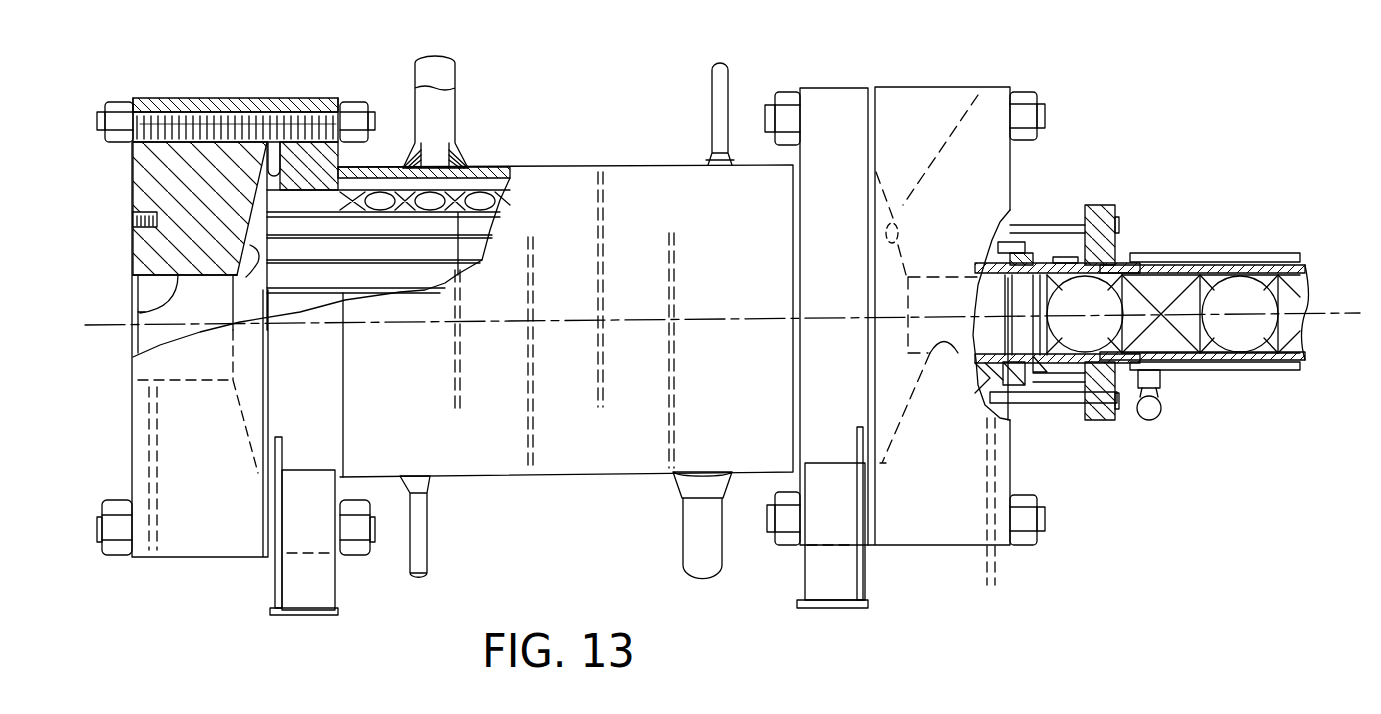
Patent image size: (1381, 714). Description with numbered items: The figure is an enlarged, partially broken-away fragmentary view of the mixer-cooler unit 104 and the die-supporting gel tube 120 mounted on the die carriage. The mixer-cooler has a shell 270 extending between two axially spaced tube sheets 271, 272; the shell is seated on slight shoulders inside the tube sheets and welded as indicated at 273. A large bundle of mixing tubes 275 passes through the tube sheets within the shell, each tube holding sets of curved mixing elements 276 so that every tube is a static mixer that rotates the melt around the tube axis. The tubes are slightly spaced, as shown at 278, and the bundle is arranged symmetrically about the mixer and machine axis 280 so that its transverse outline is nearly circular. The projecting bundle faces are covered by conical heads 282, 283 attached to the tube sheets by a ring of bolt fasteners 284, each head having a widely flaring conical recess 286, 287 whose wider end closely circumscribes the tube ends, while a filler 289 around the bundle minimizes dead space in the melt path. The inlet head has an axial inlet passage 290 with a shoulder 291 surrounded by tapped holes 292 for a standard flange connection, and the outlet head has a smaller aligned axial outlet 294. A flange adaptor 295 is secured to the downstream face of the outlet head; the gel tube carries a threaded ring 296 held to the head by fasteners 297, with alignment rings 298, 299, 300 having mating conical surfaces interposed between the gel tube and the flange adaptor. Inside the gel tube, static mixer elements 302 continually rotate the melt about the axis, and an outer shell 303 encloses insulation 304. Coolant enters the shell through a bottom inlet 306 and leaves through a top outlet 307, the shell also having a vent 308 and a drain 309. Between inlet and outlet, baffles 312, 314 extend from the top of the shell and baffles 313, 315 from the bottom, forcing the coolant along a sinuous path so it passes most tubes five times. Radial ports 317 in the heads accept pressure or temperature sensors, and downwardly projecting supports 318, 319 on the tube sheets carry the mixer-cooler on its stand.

The mixer-cooler unit 104 is at (595, 105).
The gel tube 120 is at (1242, 248).
The shell 270 is at (636, 165).
The tube sheet 271 is at (314, 98).
The tube sheet 272 is at (833, 88).
The weld 273 is at (793, 403).
The mixing tubes 275 is at (470, 188).
The curved mixing elements 276 is at (510, 198).
The tube spacing 278 is at (477, 263).
The mixer and machine axis 280 is at (705, 320).
The inlet head 282 is at (190, 98).
The outlet head 283 is at (928, 87).
The bolt fasteners 284 is at (105, 120).
The conical recess 286 is at (243, 255).
The conical recess 287 is at (972, 96).
The filler 289 is at (276, 148).
The axial inlet passage 290 is at (140, 313).
The shoulder 291 is at (133, 283).
The tapped holes 292 is at (133, 216).
The axial outlet 294 is at (942, 360).
The flange adaptor 295 is at (1013, 395).
The ring 296 is at (1115, 212).
The fasteners 297 is at (1070, 403).
The alignment ring 298 is at (1035, 245).
The alignment ring 299 is at (1020, 390).
The alignment ring 300 is at (1065, 257).
The static mixer elements 302 is at (1295, 298).
The outer shell 303 is at (1272, 372).
The insulation 304 is at (1212, 362).
The inlet 306 is at (683, 520).
The outlet 307 is at (455, 95).
The vent 308 is at (728, 85).
The drain 309 is at (425, 530).
The baffle 312 is at (450, 385).
The baffle 313 is at (525, 425).
The baffle 314 is at (603, 400).
The baffle 315 is at (677, 402).
The radial ports 317 is at (148, 465).
The support 318 is at (295, 590).
The support 319 is at (840, 580).